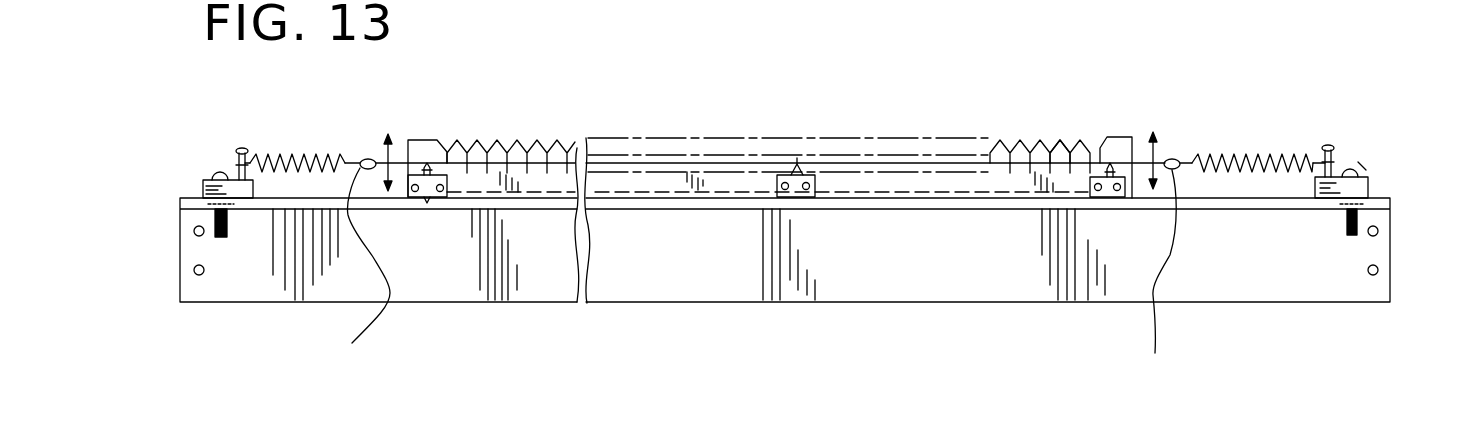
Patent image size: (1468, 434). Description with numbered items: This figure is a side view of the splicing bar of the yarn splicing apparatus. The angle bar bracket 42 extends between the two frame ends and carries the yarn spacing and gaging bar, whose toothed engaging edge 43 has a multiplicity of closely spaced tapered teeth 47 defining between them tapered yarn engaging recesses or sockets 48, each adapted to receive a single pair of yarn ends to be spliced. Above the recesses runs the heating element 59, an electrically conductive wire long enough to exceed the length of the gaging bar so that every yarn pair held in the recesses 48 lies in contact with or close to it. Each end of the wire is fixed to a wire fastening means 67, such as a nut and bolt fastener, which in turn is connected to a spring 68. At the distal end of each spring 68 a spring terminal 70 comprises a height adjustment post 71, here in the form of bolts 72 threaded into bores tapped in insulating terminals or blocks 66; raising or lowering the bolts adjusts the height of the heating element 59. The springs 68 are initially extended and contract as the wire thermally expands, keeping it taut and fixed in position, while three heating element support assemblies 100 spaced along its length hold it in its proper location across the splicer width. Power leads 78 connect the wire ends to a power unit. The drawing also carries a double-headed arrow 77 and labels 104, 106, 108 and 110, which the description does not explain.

The angle bar bracket 42 is at (1218, 303).
The toothed engaging edge 43 is at (1120, 137).
The tapered teeth 47 is at (1052, 138).
The tapered yarn engaging recesses or sockets 48 is at (503, 140).
The heating element 59 is at (697, 160).
The insulating terminals or blocks 66 is at (200, 181).
The wire fastening means 67 is at (366, 158).
The spring 68 is at (302, 160).
The spring terminal 70 is at (210, 164).
The height adjustment post 71 is at (244, 160).
The bolts 72 is at (1358, 161).
The direction of movement arrow 77 is at (387, 133).
The power leads 78 is at (380, 302).
The heating element support assemblies 100 is at (427, 203).
The element 104 is at (1160, 0).
The element 106 is at (1200, 0).
The element 108 is at (1110, 5).
The knob 110 is at (222, 172).